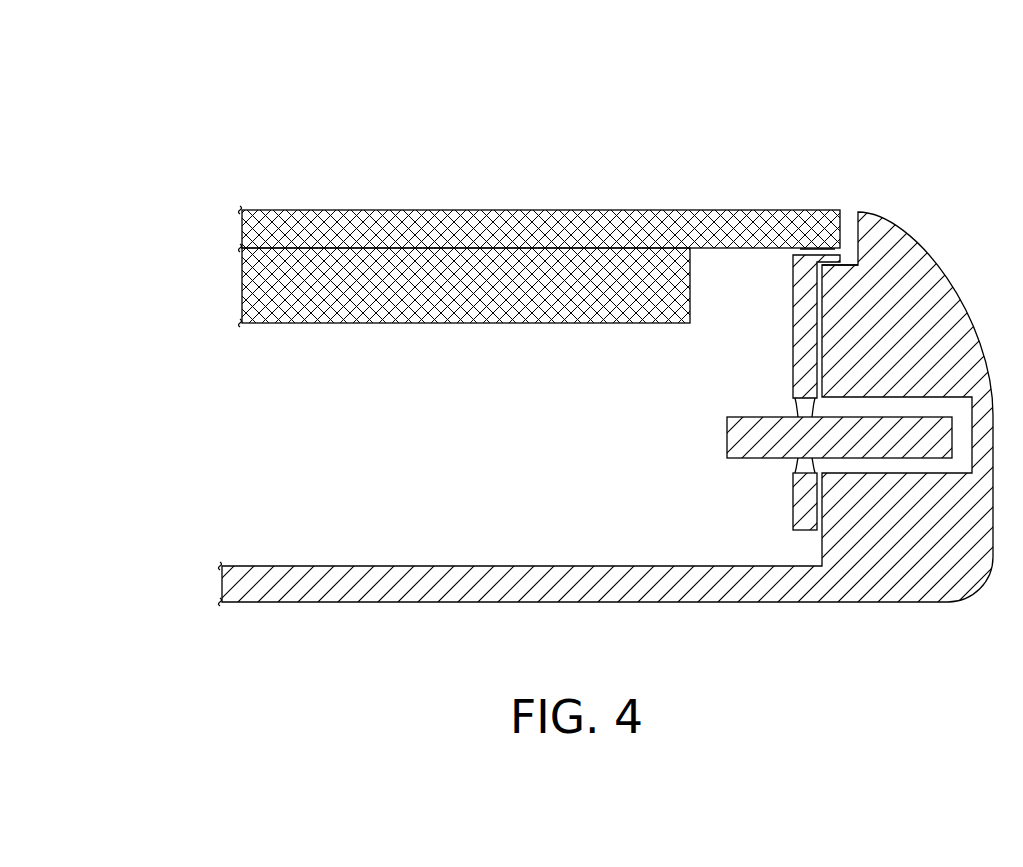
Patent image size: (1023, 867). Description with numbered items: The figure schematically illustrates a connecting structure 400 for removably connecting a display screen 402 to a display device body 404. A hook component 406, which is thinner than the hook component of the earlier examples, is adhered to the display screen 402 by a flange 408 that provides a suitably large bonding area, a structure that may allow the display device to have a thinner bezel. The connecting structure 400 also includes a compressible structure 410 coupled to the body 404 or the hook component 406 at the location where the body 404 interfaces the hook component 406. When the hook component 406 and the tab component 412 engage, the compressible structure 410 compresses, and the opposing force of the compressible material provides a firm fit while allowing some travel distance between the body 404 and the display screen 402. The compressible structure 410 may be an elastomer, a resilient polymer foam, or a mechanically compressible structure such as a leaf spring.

The connecting structure 400 is at (685, 116).
The display screen 402 is at (217, 212).
The display device body 404 is at (933, 337).
The hook component 406 is at (792, 312).
The flange 408 is at (815, 251).
The compressible structure 410 is at (845, 279).
The tab component 412 is at (858, 447).